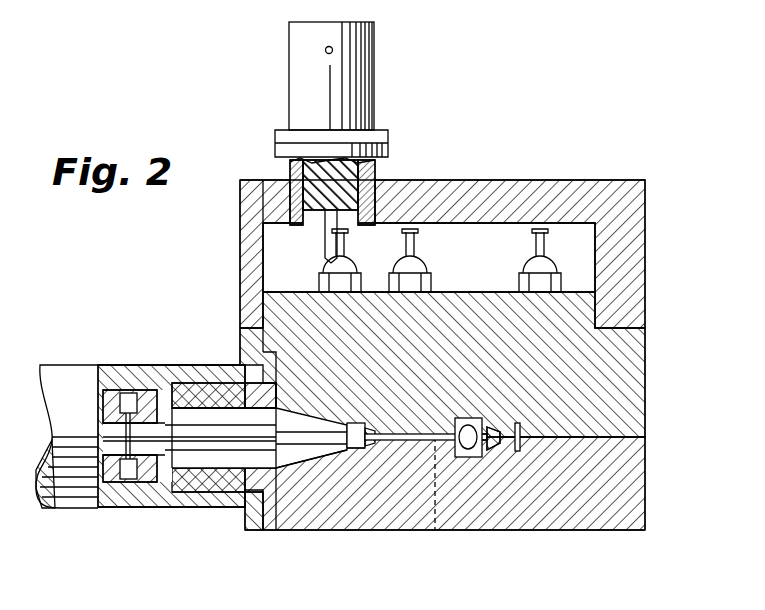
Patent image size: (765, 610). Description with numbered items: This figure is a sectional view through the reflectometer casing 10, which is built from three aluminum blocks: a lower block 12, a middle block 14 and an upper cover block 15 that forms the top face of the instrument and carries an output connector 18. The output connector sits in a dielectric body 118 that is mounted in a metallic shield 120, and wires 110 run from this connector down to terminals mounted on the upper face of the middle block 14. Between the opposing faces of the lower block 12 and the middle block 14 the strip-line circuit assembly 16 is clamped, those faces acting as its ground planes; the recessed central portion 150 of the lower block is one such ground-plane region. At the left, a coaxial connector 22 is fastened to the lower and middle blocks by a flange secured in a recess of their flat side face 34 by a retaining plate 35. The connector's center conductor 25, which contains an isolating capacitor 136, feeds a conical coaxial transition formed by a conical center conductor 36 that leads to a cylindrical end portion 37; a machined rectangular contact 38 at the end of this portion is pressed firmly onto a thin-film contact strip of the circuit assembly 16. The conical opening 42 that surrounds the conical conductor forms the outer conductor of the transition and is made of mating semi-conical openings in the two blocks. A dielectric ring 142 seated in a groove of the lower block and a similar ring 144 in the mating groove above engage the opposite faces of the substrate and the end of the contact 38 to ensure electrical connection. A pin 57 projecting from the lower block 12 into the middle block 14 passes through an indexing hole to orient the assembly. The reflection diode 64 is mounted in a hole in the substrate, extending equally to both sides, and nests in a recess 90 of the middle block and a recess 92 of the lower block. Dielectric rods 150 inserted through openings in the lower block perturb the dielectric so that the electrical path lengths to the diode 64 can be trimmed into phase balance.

The casing 10 is at (240, 240).
The lower block 12 is at (646, 476).
The middle block 14 is at (645, 393).
The upper cover block 15 is at (545, 180).
The circuit assembly 16 is at (418, 440).
The output connector 18 is at (374, 68).
The coaxial connector 22 is at (118, 508).
The center conductor 25 is at (210, 455).
The flat side face 34 is at (266, 298).
The retaining plate 35 is at (245, 348).
The conical center conductor 36 is at (302, 428).
The cylindrical end portion 37 is at (354, 448).
The rectangular contact 38 is at (358, 424).
The conical opening 42 is at (297, 455).
The pin 57 is at (521, 430).
The diode 64 is at (466, 418).
The recess 90 is at (491, 426).
The recess 92 is at (466, 457).
The wire 110 is at (330, 258).
The dielectric body 118 is at (313, 175).
The metallic shield 120 is at (374, 102).
The capacitor 136 is at (146, 488).
The dielectric ring 142 is at (503, 450).
The dielectric ring 144 is at (384, 434).
The dielectric rod 150 is at (452, 530).